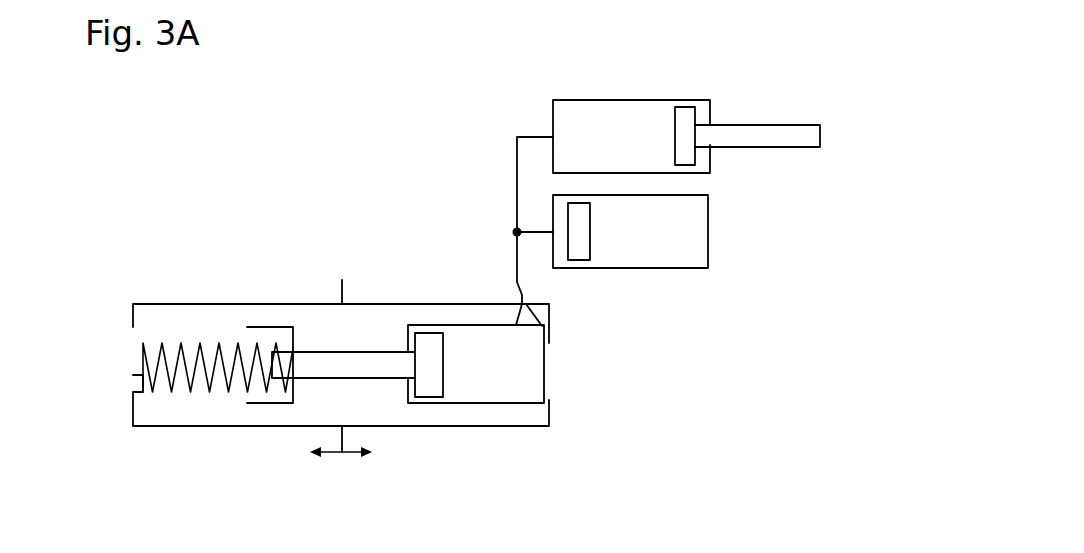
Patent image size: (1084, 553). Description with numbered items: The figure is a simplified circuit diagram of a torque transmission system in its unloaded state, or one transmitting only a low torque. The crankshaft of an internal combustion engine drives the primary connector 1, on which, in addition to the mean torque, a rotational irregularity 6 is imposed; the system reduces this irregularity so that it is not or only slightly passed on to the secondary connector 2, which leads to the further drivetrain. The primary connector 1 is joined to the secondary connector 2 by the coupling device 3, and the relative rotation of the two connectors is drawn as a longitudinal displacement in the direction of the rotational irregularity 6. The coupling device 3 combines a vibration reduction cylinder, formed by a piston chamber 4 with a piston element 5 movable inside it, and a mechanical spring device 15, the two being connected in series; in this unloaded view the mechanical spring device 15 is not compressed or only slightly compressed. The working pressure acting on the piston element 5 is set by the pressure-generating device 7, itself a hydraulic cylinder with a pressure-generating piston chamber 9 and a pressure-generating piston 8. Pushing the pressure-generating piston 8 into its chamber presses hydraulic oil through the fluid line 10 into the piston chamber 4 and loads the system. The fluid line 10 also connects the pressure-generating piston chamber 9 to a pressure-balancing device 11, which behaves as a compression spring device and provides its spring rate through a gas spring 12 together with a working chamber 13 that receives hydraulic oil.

The primary connector 1 is at (341, 432).
The secondary connector 2 is at (339, 292).
The coupling device 3 is at (555, 370).
The piston chamber 4 is at (488, 387).
The piston element 5 is at (357, 353).
The rotational irregularity 6 is at (352, 455).
The pressure-generating device 7 is at (823, 121).
The pressure-generating piston 8 is at (822, 133).
The pressure-generating piston chamber 9 is at (612, 110).
The fluid line 10 is at (517, 148).
The pressure-balancing device 11 is at (708, 228).
The gas spring 12 is at (685, 255).
The working chamber 13 is at (562, 253).
The mechanical spring device 15 is at (200, 342).